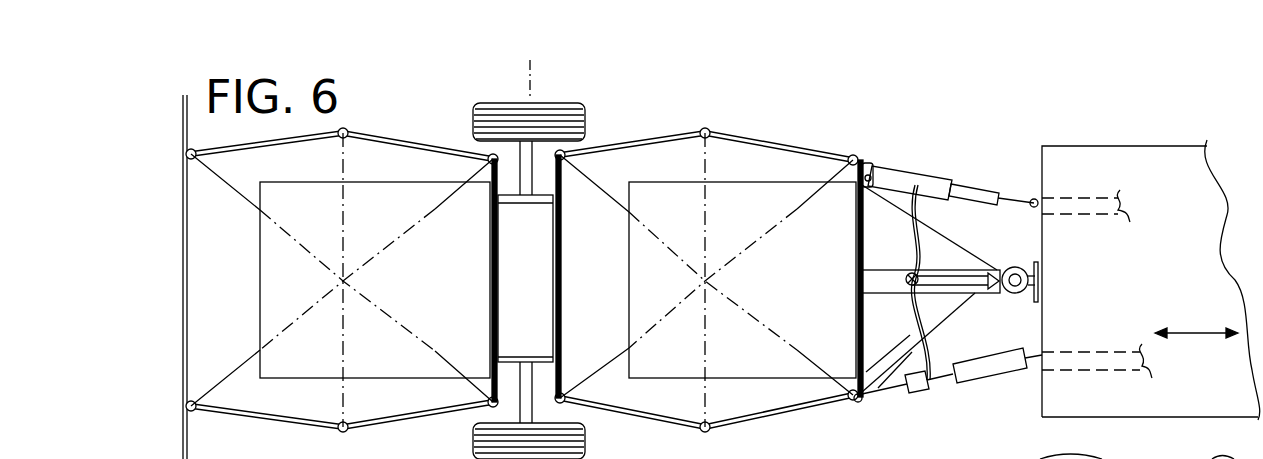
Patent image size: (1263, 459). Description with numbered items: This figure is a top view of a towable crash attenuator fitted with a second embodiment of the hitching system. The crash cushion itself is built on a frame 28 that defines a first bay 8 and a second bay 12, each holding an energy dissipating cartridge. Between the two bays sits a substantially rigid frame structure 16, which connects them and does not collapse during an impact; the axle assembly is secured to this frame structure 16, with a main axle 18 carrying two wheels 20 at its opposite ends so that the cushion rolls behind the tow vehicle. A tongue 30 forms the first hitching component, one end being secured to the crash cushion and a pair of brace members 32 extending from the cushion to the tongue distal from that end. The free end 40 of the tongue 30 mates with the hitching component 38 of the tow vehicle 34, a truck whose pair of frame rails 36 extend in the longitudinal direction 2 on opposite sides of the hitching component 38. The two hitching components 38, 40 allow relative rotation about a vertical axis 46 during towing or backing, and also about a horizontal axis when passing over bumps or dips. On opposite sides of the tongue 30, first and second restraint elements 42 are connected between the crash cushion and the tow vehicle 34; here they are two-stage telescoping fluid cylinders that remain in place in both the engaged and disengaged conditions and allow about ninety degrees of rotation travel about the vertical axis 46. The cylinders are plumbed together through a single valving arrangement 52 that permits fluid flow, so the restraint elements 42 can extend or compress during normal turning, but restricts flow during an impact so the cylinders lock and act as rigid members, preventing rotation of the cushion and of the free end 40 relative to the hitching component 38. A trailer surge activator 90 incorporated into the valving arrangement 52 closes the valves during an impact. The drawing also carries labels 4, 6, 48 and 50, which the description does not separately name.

The longitudinal direction 2 is at (1196, 360).
The frame bar 4 is at (853, 343).
The implement bar 6 is at (183, 372).
The first bay 8 is at (342, 271).
The second bay 12 is at (709, 261).
The frame structure 16 is at (536, 266).
The main axle 18 is at (532, 398).
The wheels 20 is at (575, 106).
The frame 28 is at (296, 430).
The tongue 30 is at (893, 268).
The brace members 32 is at (933, 328).
The vehicle 34 is at (1151, 280).
The frame rails 36 is at (1115, 352).
The hitching component 38 is at (1040, 290).
The free end 40 is at (1026, 280).
The restraint elements 42 is at (932, 280).
The vertical axis 46 is at (1017, 294).
The cylinder mounting bracket 48 is at (874, 168).
The cylinder rod end 50 is at (1030, 197).
The valving arrangement 52 is at (888, 353).
The trailer surge activator 90 is at (985, 293).